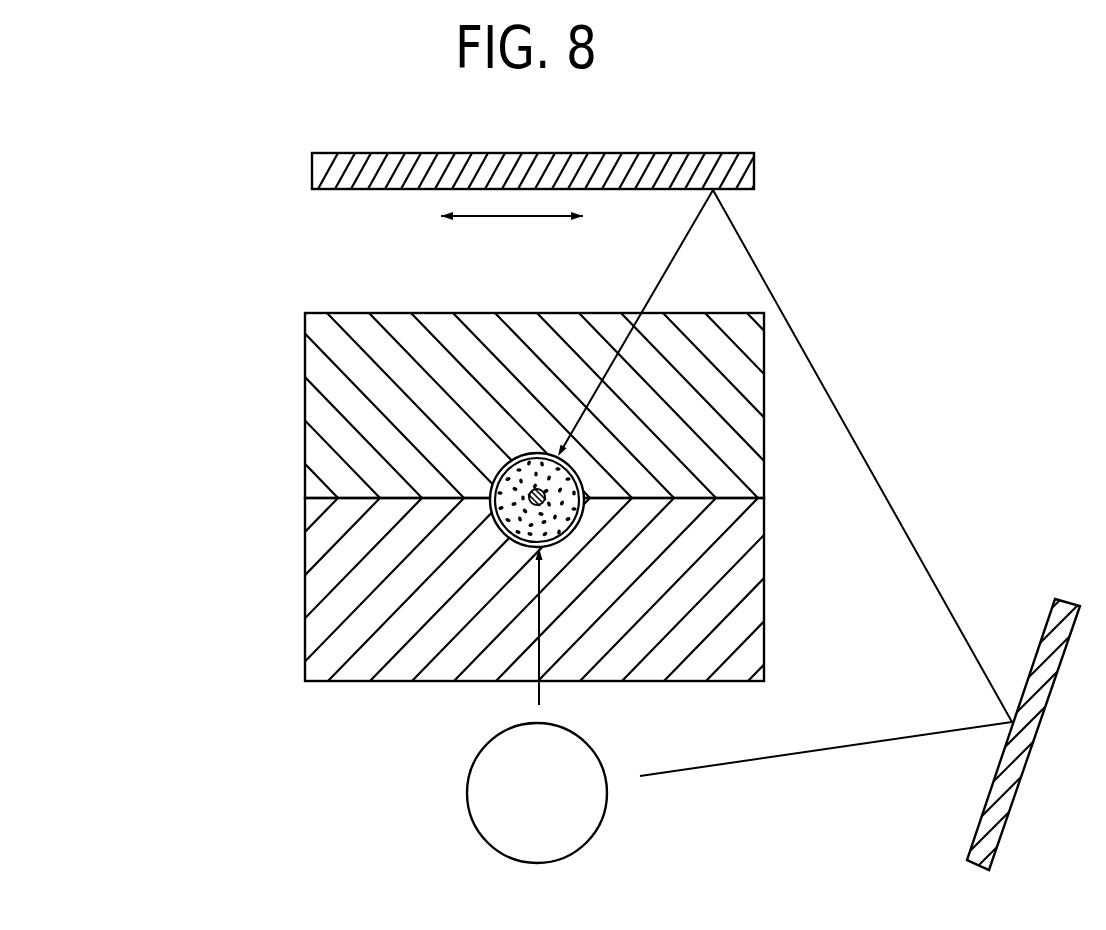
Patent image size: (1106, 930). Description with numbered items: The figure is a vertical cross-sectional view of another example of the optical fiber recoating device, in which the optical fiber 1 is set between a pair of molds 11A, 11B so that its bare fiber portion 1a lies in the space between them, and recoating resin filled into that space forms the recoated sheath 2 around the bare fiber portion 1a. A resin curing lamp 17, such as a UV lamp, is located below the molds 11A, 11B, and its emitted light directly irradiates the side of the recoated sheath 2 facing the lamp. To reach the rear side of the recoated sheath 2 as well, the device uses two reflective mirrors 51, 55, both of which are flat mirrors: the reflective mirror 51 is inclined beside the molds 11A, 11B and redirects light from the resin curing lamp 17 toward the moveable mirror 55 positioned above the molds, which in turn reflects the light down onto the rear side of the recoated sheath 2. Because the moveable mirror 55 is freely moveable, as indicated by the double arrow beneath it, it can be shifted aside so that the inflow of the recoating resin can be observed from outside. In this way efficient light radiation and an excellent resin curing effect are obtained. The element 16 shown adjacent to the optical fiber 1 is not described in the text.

The optical fiber 1 is at (488, 521).
The bare fiber portion 1a is at (537, 490).
The recoated sheath 2 is at (500, 468).
The coating 16 is at (516, 457).
The mold 11A is at (305, 598).
The mold 11B is at (305, 421).
The resin curing lamp 17 is at (477, 822).
The reflective mirror 51 is at (1043, 632).
The moveable mirror 55 is at (753, 162).